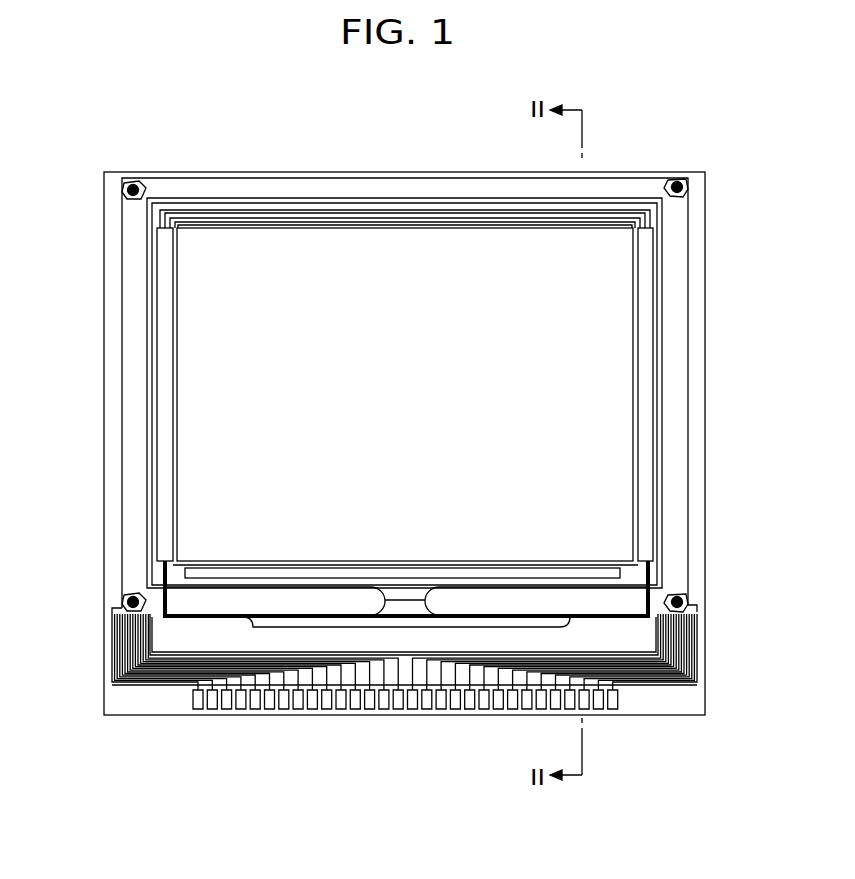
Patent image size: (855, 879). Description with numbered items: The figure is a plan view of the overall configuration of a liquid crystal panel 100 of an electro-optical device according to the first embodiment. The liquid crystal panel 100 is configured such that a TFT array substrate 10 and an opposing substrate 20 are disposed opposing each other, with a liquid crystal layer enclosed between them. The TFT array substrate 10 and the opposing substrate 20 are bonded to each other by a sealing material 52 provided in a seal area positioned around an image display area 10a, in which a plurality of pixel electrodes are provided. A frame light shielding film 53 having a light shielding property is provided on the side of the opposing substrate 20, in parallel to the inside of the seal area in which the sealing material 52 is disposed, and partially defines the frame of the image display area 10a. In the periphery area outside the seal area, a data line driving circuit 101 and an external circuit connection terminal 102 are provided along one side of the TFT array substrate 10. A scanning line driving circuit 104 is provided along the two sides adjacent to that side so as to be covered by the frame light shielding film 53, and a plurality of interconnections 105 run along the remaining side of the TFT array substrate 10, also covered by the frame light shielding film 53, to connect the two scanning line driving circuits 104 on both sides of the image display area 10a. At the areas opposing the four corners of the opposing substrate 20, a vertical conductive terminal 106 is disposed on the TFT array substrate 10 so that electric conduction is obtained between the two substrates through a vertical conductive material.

The liquid crystal panel 100 is at (647, 112).
The TFT array substrate 10 is at (228, 176).
The image display area 10a is at (218, 348).
The opposing substrate 20 is at (427, 178).
The sealing material 52 is at (678, 325).
The frame light shielding film 53 is at (637, 572).
The data line driving circuit 101 is at (178, 640).
The external circuit connection terminal 102 is at (372, 690).
The scanning line driving circuit 104 is at (648, 395).
The interconnections 105 is at (330, 215).
The vertical conductive terminal 106 is at (142, 189).